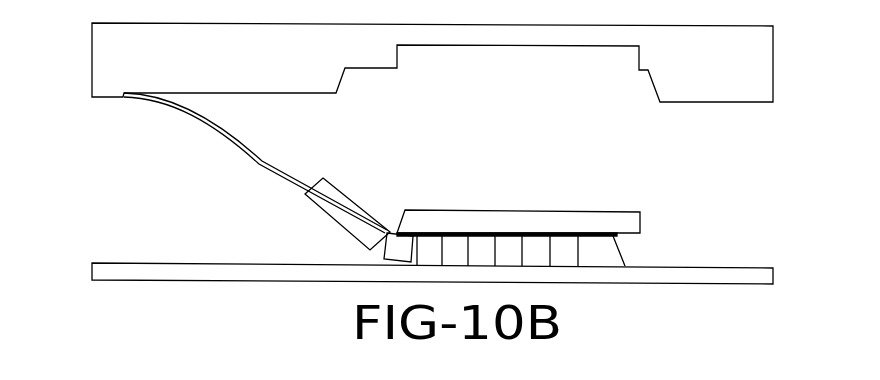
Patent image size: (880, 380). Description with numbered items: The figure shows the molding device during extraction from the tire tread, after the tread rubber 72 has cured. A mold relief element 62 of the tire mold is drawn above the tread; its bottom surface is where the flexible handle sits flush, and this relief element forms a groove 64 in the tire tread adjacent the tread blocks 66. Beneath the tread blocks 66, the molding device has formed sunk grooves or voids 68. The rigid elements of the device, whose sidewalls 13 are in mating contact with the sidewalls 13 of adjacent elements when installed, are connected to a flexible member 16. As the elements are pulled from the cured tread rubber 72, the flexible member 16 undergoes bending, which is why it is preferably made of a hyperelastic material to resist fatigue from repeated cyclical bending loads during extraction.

The sidewall 13 is at (260, 161).
The flexible member 16 is at (357, 203).
The mold relief element 62 is at (323, 74).
The groove 64 is at (205, 272).
The tread block 66 is at (565, 220).
The sunk groove 68 is at (626, 248).
The tread rubber 72 is at (167, 262).